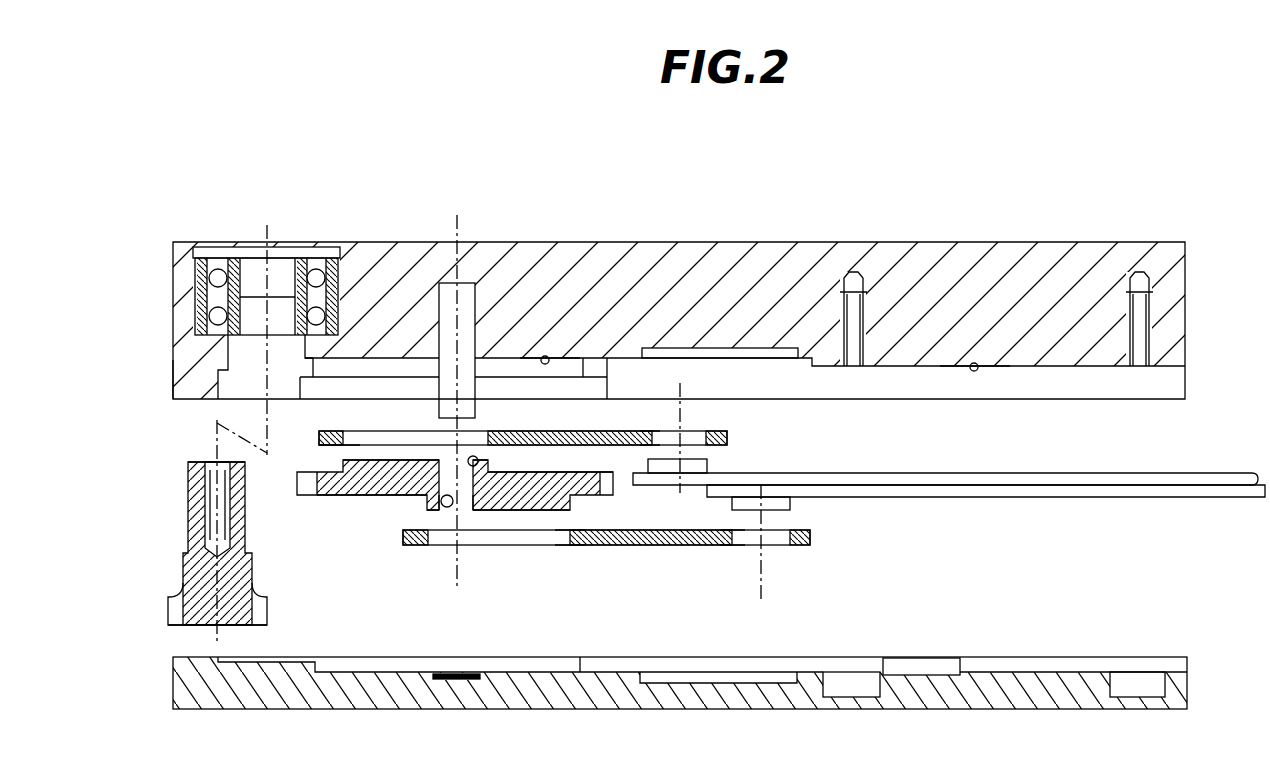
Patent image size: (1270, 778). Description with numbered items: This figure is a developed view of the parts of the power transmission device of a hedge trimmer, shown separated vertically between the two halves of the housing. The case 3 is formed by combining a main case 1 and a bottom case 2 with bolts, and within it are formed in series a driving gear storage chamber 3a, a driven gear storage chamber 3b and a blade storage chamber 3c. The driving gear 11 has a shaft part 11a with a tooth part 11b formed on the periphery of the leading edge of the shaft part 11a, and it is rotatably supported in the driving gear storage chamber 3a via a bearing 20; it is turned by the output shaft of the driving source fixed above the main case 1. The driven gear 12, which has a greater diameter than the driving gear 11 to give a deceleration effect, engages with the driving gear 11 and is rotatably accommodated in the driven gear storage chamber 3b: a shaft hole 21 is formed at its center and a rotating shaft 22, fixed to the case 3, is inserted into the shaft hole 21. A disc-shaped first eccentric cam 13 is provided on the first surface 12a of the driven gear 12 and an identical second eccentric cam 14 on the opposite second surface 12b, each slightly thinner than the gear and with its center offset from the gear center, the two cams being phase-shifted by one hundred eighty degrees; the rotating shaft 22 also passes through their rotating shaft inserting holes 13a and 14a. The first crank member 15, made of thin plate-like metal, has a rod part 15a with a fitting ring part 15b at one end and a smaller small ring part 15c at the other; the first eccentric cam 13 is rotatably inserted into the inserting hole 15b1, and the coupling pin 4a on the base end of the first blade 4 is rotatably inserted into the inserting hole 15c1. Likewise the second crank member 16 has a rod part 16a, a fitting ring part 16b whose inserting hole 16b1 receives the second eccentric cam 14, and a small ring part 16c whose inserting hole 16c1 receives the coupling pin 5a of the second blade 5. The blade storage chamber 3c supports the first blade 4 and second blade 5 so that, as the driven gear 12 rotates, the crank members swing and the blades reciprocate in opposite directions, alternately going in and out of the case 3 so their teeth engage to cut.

The main case 1 is at (173, 372).
The bottom case 2 is at (178, 675).
The case 3 is at (615, 360).
The driving gear storage chamber 3a is at (240, 365).
The driven gear storage chamber 3b is at (546, 356).
The blade storage chamber 3c is at (974, 363).
The first blade 4 is at (945, 456).
The coupling pin 4a is at (702, 466).
The second blade 5 is at (986, 516).
The coupling pin 5a is at (782, 503).
The driving gear 11 is at (187, 531).
The shaft part 11a is at (193, 560).
The tooth part 11b is at (202, 593).
The driven gear 12 is at (452, 505).
The first surface 12a is at (558, 474).
The second surface 12b is at (340, 497).
The first eccentric cam 13 is at (390, 466).
The rotating shaft inserting hole 13a is at (479, 461).
The second eccentric cam 14 is at (562, 503).
The rotating shaft inserting hole 14a is at (469, 512).
The first crank member 15 is at (543, 435).
The rod part 15a is at (556, 432).
The fitting ring part 15b is at (324, 433).
The inserting hole 15b1 is at (345, 445).
The small ring part 15c is at (715, 433).
The inserting hole 15c1 is at (655, 422).
The second crank member 16 is at (645, 554).
The rod part 16a is at (629, 546).
The fitting ring part 16b is at (410, 546).
The inserting hole 16b1 is at (566, 546).
The small ring part 16c is at (798, 546).
The inserting hole 16c1 is at (733, 546).
The bearing 20 is at (195, 277).
The shaft hole 21 is at (441, 505).
The rotating shaft 22 is at (449, 282).